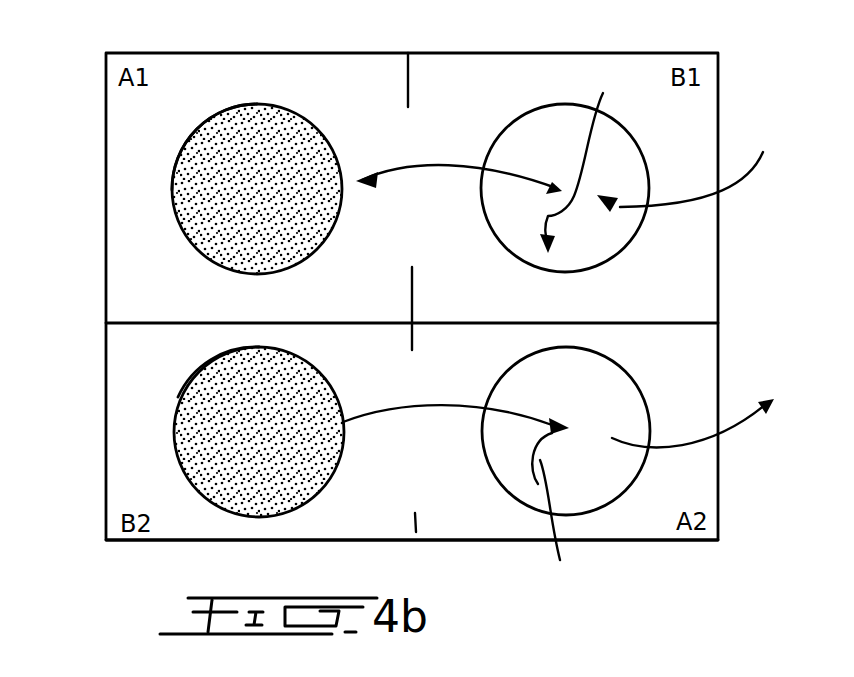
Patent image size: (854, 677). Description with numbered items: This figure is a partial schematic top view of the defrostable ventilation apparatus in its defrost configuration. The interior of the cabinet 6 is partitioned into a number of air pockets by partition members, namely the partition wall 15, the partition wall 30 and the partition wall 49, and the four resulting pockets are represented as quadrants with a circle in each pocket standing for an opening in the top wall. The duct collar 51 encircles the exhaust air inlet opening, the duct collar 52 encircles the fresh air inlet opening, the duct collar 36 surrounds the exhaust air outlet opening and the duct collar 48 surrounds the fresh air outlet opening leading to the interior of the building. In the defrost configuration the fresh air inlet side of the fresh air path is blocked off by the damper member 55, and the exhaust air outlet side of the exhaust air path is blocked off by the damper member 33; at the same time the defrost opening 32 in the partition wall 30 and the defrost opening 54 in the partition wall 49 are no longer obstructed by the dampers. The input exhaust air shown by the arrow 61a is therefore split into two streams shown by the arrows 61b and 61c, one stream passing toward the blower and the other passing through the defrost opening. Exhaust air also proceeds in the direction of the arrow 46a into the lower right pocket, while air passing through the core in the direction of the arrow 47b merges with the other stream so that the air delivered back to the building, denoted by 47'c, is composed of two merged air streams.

The cabinet 6 is at (183, 545).
The partition wall 15 is at (147, 323).
The partition wall 30 is at (417, 83).
The defrost opening 32 is at (408, 123).
The damper member 33 is at (222, 442).
The duct collar 36 is at (178, 397).
The arrow 46a is at (428, 385).
The arrow 47b is at (571, 509).
The air delivered back to the building 47'c is at (705, 442).
The duct collar 48 is at (628, 490).
The partition wall 49 is at (416, 532).
The duct collar 51 is at (623, 248).
The duct collar 52 is at (172, 190).
The defrost opening 54 is at (415, 482).
The damper member 55 is at (213, 150).
The arrow 61a is at (742, 166).
The arrow 61b is at (592, 157).
The arrow 61c is at (456, 165).